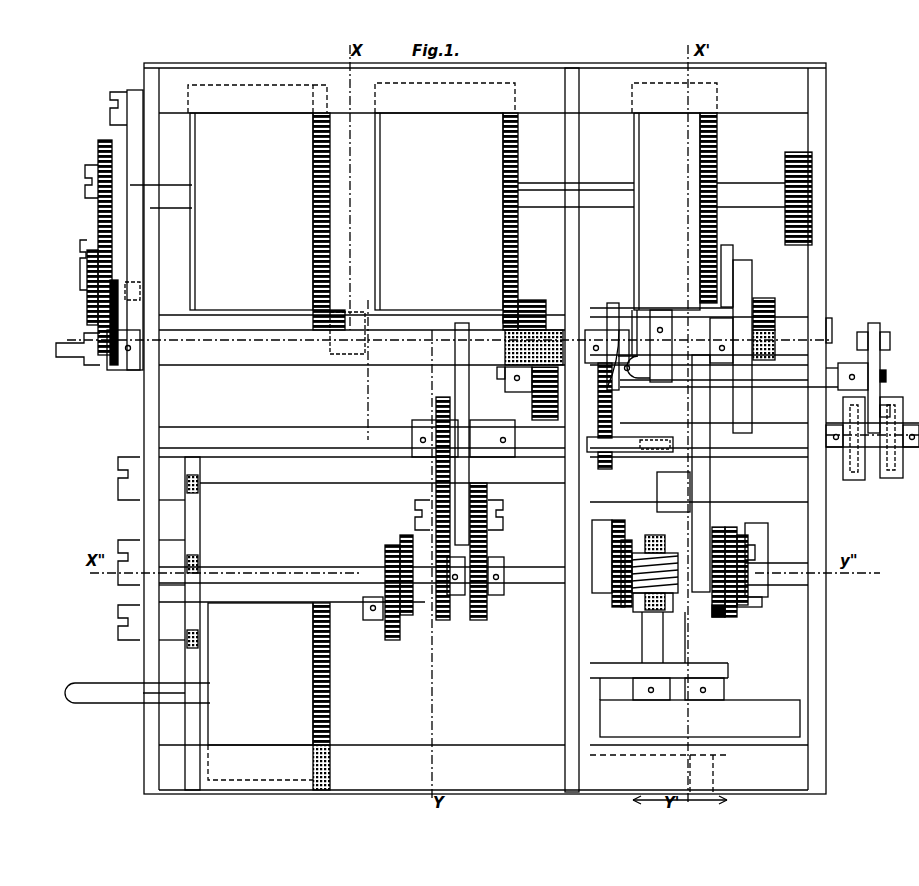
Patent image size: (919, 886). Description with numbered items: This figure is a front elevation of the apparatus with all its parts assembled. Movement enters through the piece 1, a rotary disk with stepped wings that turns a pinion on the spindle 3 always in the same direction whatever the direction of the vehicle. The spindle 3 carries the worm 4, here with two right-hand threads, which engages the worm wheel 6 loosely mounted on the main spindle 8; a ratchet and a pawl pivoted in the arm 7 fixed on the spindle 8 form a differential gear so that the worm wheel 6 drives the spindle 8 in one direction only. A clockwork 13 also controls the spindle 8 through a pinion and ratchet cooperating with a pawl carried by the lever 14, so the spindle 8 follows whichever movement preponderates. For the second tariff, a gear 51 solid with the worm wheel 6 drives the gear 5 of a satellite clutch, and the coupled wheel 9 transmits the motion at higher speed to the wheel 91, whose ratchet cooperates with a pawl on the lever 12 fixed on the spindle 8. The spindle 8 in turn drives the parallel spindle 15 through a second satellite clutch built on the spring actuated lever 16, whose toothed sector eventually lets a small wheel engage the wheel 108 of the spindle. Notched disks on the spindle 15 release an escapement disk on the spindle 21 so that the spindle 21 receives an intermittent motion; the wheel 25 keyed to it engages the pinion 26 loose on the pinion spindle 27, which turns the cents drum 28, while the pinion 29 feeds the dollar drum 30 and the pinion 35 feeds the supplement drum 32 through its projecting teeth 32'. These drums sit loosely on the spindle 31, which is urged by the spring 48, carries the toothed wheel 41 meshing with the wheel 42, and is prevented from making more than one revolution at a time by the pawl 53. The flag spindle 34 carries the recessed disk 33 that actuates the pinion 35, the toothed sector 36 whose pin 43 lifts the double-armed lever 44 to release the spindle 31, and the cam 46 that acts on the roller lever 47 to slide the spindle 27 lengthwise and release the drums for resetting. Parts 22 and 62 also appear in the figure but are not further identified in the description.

The piece 1 is at (700, 707).
The spindle 3 is at (663, 637).
The worm 4 is at (637, 613).
The gear 5 is at (719, 562).
The worm wheel 6 is at (660, 548).
The arm 7 is at (620, 538).
The main spindle 8 is at (526, 583).
The wheel 9 is at (735, 530).
The lever 12 is at (768, 544).
The clockwork 13 is at (247, 612).
The lever 14 is at (393, 546).
The spindle 15 is at (368, 432).
The spring actuated lever 16 is at (455, 388).
The spindle 21 is at (780, 386).
The pinion 22 is at (630, 464).
The wheel 25 is at (532, 412).
The pinion 26 is at (531, 302).
The pinion spindle 27 is at (441, 324).
The drum 28 is at (445, 196).
The pinion 29 is at (368, 314).
The drum 30 is at (259, 197).
The spindle 31 is at (530, 196).
The figure drum 32 is at (674, 219).
The projecting teeth 32' is at (730, 208).
The recessed disk 33 is at (752, 272).
The flag spindle 34 is at (66, 360).
The pinion 35 is at (722, 300).
The toothed sector 36 is at (118, 370).
The toothed wheel 41 is at (92, 205).
The wheel 42 is at (98, 151).
The projecting pin 43 is at (132, 291).
The double-armed lever 44 is at (138, 232).
The cam 46 is at (607, 306).
The spring actuated roller lever 47 is at (660, 383).
The spring 48 is at (812, 192).
The gear 51 is at (720, 620).
The pawl 53 is at (136, 95).
The gear 62 is at (625, 608).
The wheel 91 is at (742, 607).
The wheel 108 is at (428, 466).